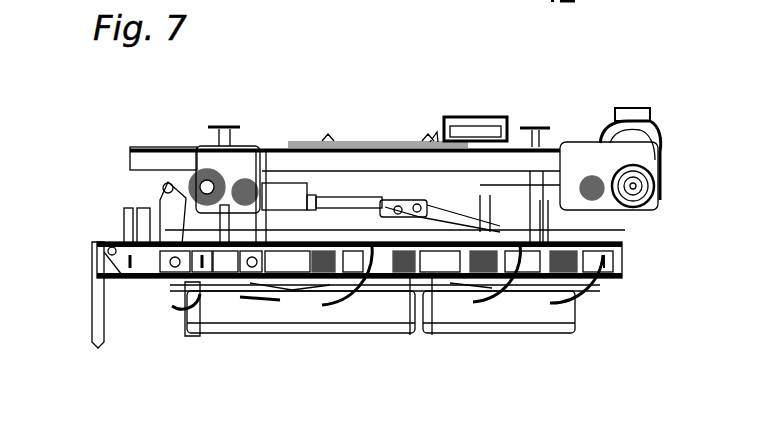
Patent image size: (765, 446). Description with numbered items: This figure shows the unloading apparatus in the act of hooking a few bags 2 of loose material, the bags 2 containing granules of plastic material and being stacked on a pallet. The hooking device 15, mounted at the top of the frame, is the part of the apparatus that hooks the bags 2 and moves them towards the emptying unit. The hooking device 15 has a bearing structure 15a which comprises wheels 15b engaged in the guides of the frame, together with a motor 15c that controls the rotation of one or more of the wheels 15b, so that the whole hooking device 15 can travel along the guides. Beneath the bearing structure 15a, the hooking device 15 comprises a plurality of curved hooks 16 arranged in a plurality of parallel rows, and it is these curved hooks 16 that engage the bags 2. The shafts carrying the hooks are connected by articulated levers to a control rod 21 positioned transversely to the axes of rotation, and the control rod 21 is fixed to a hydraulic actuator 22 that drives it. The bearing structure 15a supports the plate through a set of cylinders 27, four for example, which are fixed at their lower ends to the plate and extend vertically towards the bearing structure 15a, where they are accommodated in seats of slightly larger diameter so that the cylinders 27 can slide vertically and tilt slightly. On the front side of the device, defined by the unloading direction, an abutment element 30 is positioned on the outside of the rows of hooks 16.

The bags 2 is at (293, 316).
The hooking device 15 is at (448, 105).
The bearing structure 15a is at (495, 150).
The wheels 15b is at (643, 203).
The motor 15c is at (650, 140).
The curved hooks 16 is at (200, 300).
The control rod 21 is at (352, 202).
The hydraulic actuator 22 is at (286, 190).
The cylinders 27 is at (227, 223).
The abutment element 30 is at (93, 306).